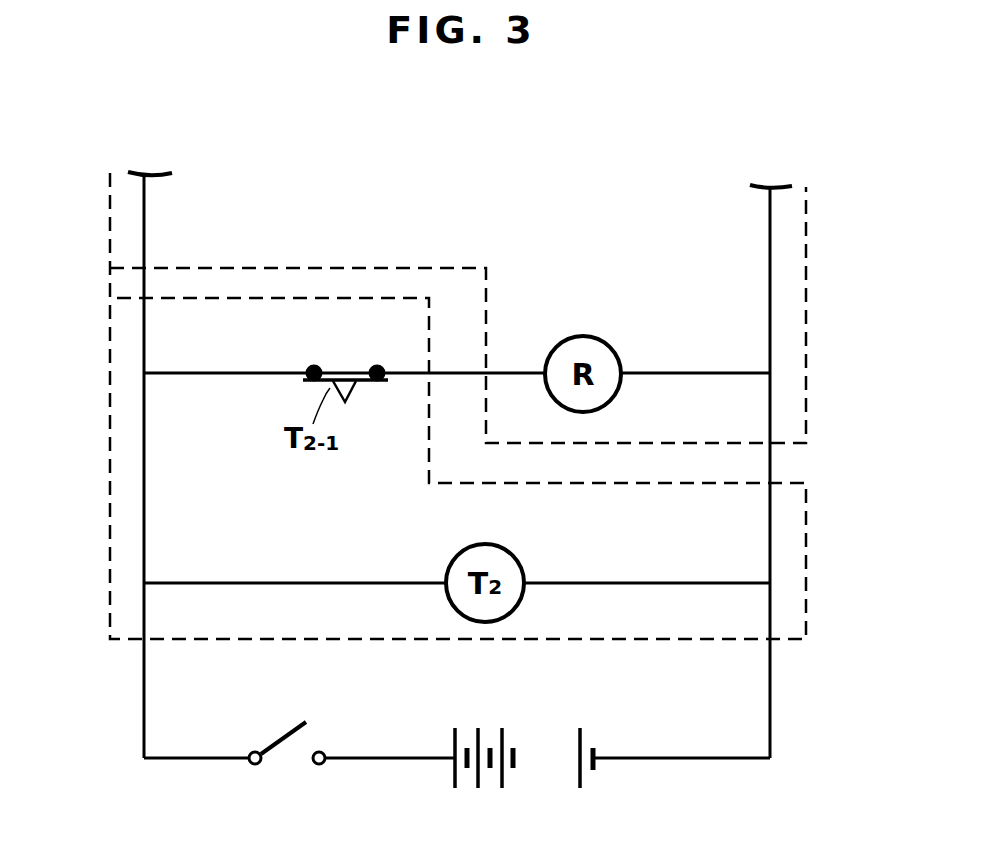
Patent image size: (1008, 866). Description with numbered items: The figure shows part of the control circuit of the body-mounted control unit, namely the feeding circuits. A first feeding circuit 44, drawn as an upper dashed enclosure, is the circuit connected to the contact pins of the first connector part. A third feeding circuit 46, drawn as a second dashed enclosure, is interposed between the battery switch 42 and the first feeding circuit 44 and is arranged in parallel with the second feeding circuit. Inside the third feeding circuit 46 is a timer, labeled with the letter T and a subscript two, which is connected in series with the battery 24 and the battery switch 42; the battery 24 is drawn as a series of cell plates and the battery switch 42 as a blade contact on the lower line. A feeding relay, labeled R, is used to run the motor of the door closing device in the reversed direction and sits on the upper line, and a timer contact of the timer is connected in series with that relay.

The battery 24 is at (452, 776).
The battery switch 42 is at (283, 748).
The first feeding circuit 44 is at (806, 292).
The third feeding circuit 46 is at (110, 400).